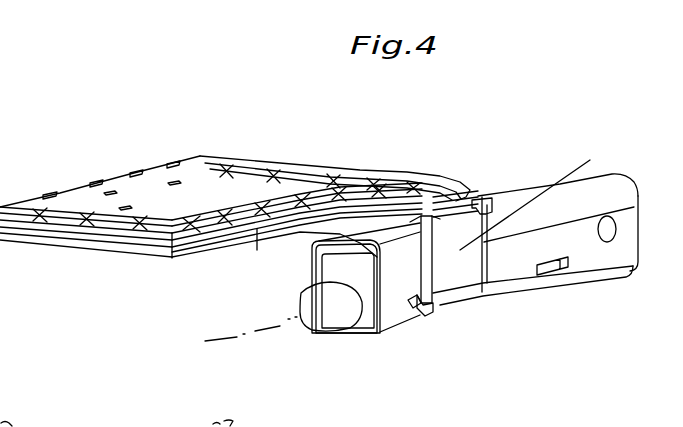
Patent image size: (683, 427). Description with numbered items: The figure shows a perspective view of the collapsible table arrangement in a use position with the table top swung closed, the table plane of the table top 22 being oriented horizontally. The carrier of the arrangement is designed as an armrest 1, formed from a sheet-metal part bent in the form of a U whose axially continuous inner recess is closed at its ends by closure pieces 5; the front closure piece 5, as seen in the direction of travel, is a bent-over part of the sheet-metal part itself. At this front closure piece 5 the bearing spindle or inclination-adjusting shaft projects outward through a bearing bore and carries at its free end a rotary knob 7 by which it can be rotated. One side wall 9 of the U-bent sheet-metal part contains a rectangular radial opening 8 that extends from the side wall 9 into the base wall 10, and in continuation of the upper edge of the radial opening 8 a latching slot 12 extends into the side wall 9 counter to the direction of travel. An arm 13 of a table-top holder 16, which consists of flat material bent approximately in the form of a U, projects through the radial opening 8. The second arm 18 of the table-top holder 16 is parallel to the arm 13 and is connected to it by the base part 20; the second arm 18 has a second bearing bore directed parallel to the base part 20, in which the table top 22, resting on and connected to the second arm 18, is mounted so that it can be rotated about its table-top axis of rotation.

The armrest 1 is at (572, 152).
The closure piece 5 is at (330, 272).
The rotary knob 7 is at (320, 300).
The radial opening 8 is at (428, 317).
The side wall 9 is at (587, 252).
The base wall 10 is at (527, 293).
The latching slot 12 is at (538, 264).
The arm 13 is at (415, 303).
The table-top holder 16 is at (490, 175).
The second arm 18 is at (410, 222).
The base part 20 is at (590, 160).
The table top 22 is at (235, 130).